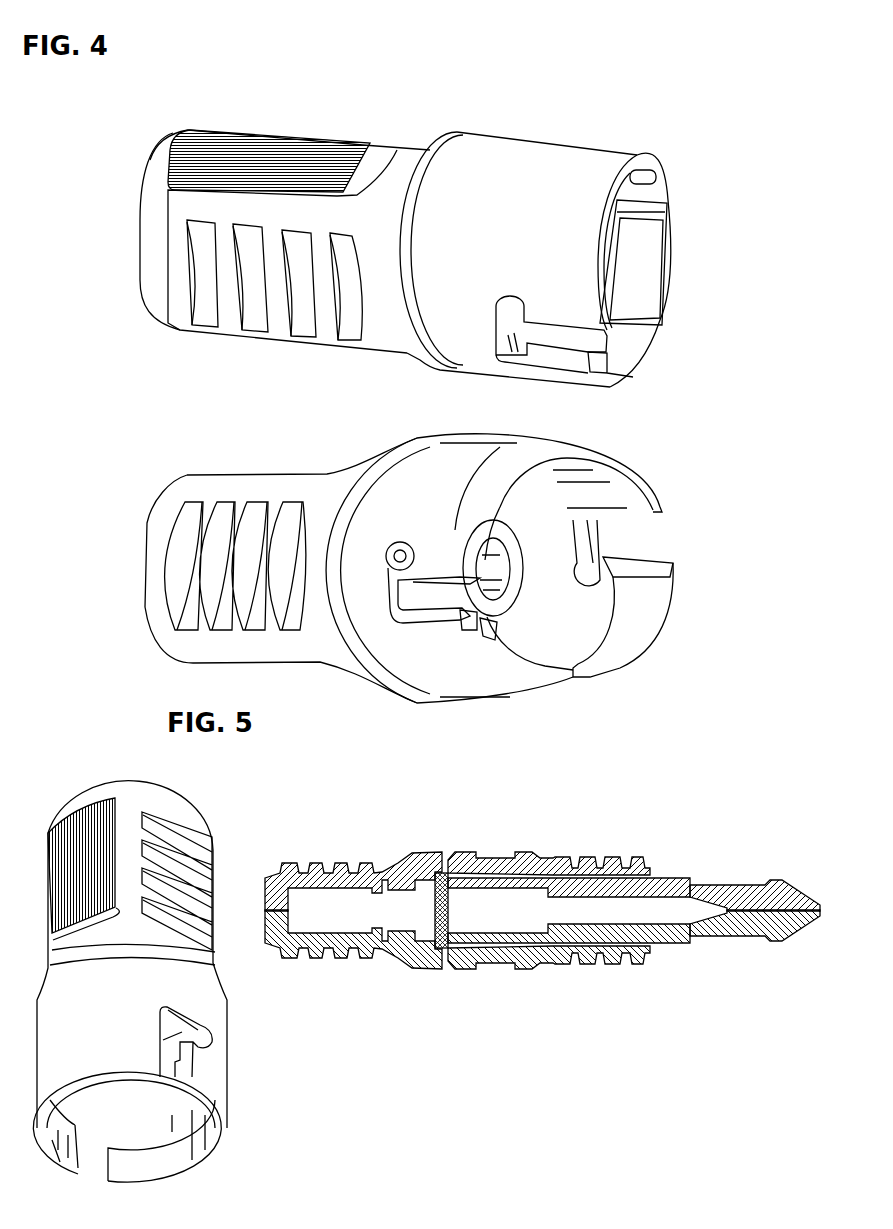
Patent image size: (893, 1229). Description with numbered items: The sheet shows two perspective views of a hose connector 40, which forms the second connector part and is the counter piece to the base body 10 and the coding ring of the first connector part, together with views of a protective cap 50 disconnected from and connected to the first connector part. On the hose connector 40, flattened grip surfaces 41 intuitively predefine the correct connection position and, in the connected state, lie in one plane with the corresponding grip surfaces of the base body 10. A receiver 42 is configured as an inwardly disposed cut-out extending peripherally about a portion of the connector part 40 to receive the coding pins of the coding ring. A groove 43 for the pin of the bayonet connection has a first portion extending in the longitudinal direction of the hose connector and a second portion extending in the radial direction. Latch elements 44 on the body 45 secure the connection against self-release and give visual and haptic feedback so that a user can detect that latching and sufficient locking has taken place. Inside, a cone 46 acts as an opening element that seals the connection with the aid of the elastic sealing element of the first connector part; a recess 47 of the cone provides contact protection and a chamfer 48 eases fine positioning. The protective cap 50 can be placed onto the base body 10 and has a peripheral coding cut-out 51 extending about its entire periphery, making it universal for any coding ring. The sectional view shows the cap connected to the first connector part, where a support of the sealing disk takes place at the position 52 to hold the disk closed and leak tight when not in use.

In FIG. 4, the hose connector 40 is at (118, 163).
In FIG. 4, the grip surfaces 41 is at (283, 152).
In FIG. 4, the receiver 42 is at (650, 278).
In FIG. 4, the groove 43 is at (582, 340).
In FIG. 4, the latch elements 44 is at (520, 337).
In FIG. 4, the cylindrical body 45 is at (422, 317).
In FIG. 4, the cone 46 is at (503, 593).
In FIG. 4, the recess 47 is at (517, 617).
In FIG. 4, the chamfer 48 is at (473, 633).
In FIG. 5, the protective cap 50 is at (88, 788).
In FIG. 5, the peripheral coding cut-out 51 is at (145, 1157).
In FIG. 5, the position 52 is at (424, 918).
In FIG. 5, the base body 10 is at (645, 852).